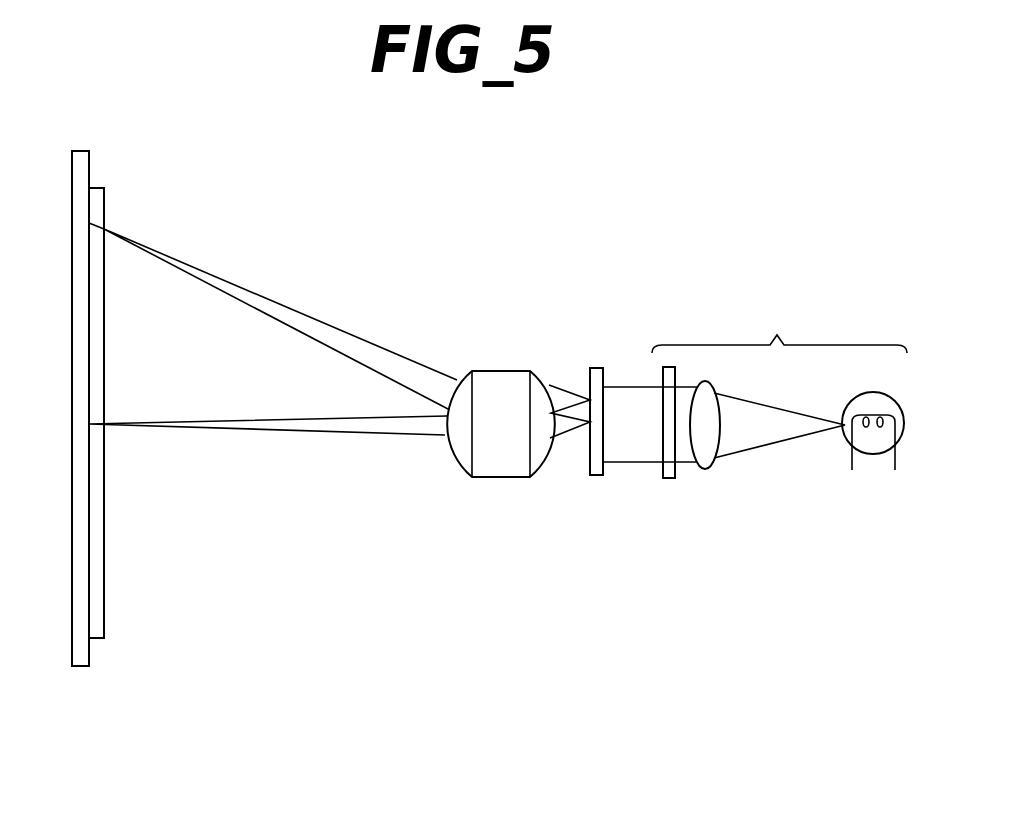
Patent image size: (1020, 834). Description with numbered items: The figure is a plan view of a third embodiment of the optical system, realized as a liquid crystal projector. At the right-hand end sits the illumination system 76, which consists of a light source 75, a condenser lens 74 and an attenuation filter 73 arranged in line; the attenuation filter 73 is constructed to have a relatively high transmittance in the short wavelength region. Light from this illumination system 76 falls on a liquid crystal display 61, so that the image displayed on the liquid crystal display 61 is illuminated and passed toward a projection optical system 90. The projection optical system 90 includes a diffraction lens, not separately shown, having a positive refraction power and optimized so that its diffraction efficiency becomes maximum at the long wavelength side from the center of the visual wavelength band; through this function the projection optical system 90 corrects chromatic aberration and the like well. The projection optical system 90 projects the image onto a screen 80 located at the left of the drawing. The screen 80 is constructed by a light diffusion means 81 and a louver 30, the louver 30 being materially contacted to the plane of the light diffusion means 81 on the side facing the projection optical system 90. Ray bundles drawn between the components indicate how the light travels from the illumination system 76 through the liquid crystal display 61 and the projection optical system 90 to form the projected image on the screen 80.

The screen 80 is at (101, 172).
The louver 30 is at (104, 563).
The light diffusion means 81 is at (89, 656).
The projection optical system 90 is at (500, 479).
The liquid crystal display 61 is at (597, 477).
The attenuation filter 73 is at (668, 480).
The condenser lens 74 is at (708, 470).
The light source 75 is at (875, 457).
The illumination system 76 is at (779, 325).